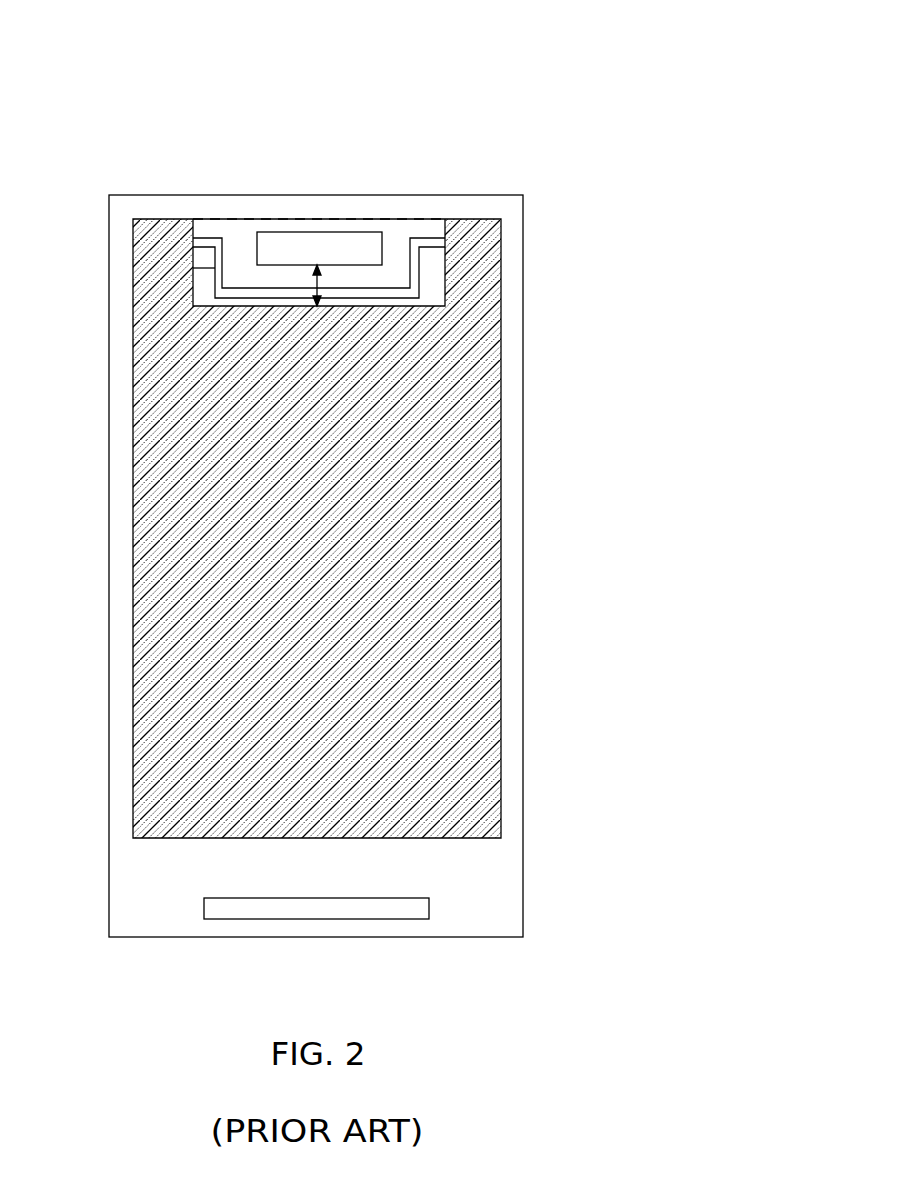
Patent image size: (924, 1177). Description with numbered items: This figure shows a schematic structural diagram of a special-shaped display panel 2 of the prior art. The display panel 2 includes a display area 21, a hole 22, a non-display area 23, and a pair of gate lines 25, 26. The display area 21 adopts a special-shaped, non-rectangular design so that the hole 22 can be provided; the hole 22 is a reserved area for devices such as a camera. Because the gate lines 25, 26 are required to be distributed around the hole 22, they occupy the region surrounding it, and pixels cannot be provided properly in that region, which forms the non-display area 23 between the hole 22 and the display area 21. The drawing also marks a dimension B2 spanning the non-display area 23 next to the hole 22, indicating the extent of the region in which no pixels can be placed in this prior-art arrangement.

The display panel 2 is at (127, 63).
The display area 21 is at (502, 457).
The hole 22 is at (289, 231).
The non-display area 23 is at (347, 218).
The gate line 25 is at (212, 236).
The gate line 26 is at (192, 269).
The border width dimension B2 is at (337, 285).